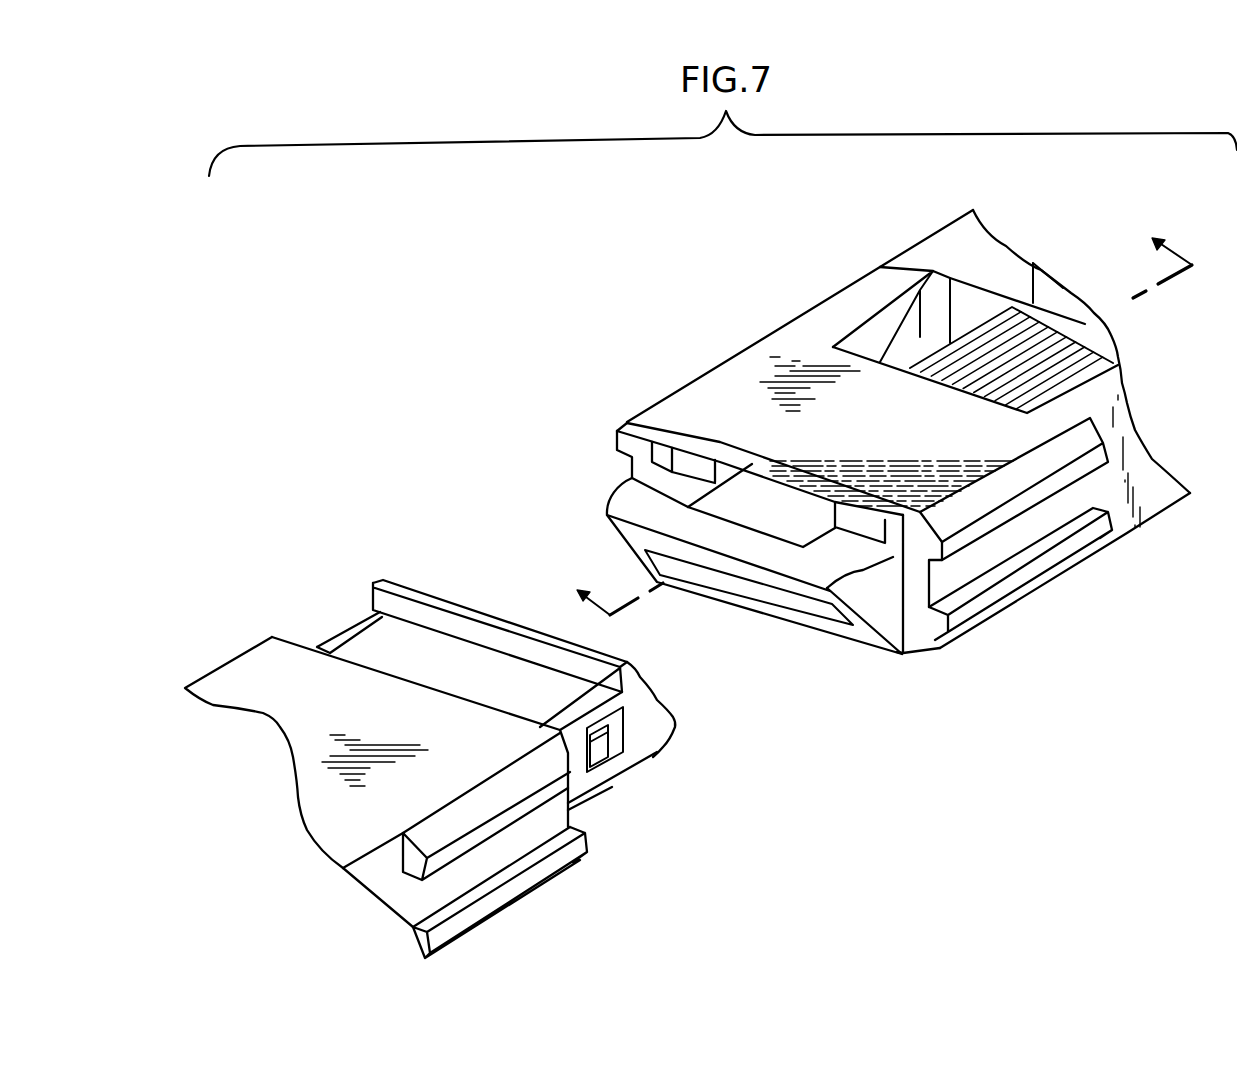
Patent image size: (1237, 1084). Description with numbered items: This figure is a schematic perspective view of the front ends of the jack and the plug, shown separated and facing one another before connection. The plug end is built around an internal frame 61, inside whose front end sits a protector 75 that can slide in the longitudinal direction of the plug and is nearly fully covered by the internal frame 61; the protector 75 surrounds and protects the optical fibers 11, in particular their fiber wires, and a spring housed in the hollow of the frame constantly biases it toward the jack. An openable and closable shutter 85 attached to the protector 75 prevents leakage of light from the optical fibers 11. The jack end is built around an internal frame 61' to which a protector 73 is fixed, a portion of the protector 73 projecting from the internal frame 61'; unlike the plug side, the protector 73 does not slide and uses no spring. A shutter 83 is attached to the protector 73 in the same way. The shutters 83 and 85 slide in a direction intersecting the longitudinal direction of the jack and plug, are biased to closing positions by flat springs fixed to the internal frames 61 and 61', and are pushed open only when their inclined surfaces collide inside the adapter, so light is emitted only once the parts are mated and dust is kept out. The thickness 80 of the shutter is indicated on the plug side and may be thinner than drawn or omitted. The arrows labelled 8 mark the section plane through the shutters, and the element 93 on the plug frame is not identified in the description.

The internal frame 61 is at (903, 429).
The internal frame 61' is at (406, 769).
The protector 75 is at (688, 463).
The contact support wall 93 is at (1053, 288).
The optical fibers 11 is at (1087, 352).
The thickness 80 is at (767, 555).
The shutter 85 is at (890, 612).
The shutter 83 is at (645, 730).
The protector 73 is at (600, 745).
The section line 8- 8 is at (880, 410).